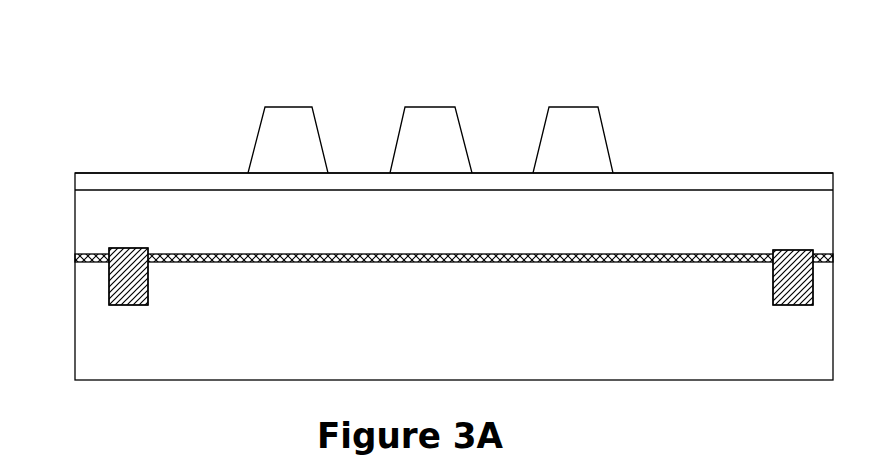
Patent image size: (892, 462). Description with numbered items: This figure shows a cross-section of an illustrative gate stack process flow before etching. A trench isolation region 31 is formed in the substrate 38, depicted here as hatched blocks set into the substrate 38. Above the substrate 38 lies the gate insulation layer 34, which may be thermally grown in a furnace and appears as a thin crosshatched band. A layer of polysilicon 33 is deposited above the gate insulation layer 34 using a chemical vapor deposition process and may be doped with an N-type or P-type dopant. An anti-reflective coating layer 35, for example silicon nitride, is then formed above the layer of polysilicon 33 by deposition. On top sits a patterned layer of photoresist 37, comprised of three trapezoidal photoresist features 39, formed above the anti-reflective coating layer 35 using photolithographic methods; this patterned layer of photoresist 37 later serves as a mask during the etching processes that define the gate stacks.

The trench isolation region 31 is at (117, 295).
The layer of polysilicon 33 is at (82, 226).
The gate insulation layer 34 is at (75, 257).
The anti-reflective coating layer 35 is at (82, 182).
The patterned layer of photoresist 37 is at (608, 92).
The substrate 38 is at (113, 348).
The photoresist features 39 is at (283, 150).